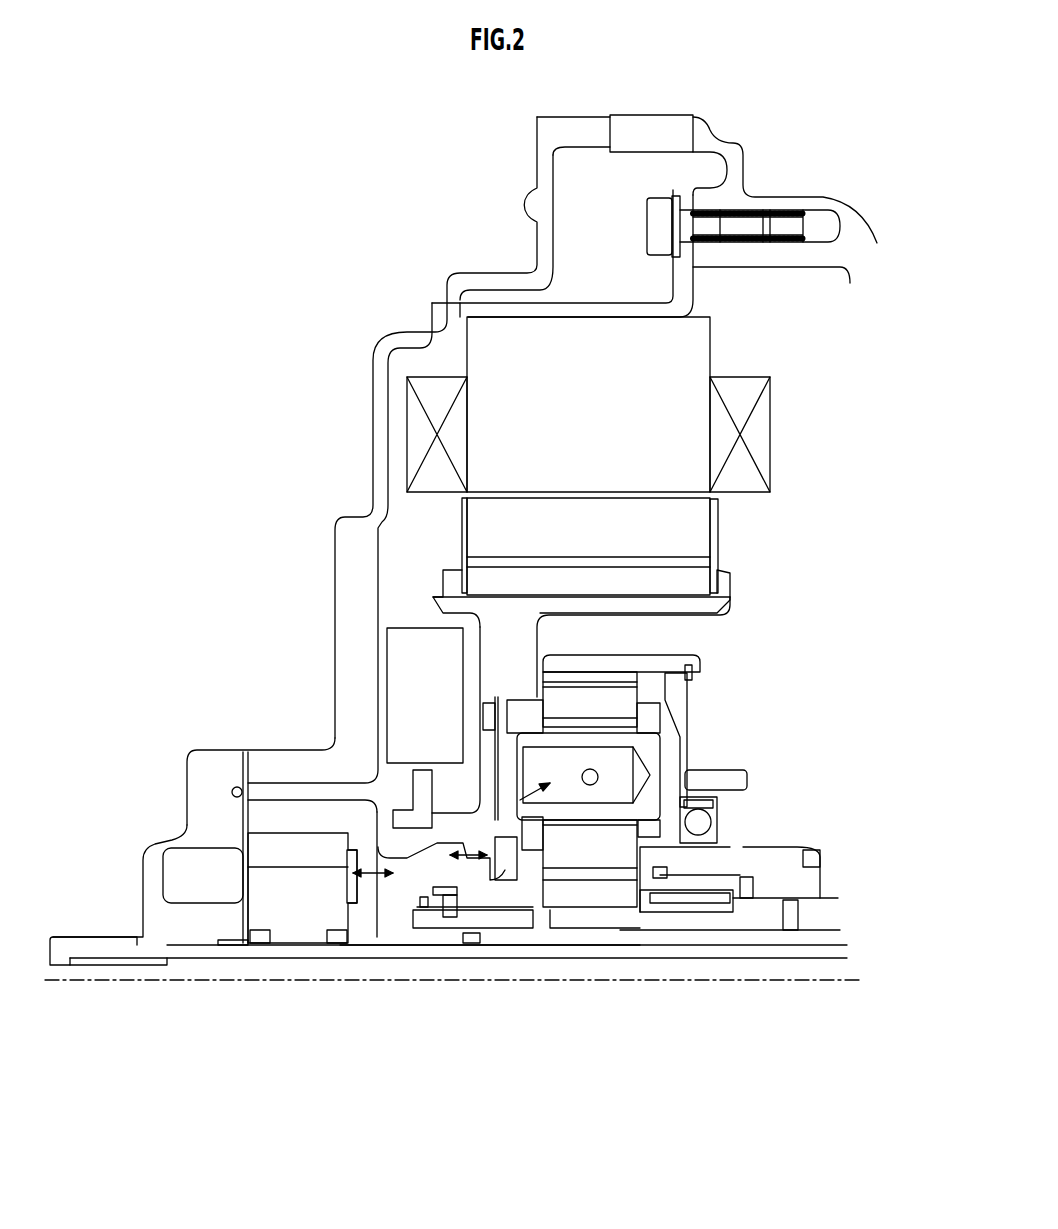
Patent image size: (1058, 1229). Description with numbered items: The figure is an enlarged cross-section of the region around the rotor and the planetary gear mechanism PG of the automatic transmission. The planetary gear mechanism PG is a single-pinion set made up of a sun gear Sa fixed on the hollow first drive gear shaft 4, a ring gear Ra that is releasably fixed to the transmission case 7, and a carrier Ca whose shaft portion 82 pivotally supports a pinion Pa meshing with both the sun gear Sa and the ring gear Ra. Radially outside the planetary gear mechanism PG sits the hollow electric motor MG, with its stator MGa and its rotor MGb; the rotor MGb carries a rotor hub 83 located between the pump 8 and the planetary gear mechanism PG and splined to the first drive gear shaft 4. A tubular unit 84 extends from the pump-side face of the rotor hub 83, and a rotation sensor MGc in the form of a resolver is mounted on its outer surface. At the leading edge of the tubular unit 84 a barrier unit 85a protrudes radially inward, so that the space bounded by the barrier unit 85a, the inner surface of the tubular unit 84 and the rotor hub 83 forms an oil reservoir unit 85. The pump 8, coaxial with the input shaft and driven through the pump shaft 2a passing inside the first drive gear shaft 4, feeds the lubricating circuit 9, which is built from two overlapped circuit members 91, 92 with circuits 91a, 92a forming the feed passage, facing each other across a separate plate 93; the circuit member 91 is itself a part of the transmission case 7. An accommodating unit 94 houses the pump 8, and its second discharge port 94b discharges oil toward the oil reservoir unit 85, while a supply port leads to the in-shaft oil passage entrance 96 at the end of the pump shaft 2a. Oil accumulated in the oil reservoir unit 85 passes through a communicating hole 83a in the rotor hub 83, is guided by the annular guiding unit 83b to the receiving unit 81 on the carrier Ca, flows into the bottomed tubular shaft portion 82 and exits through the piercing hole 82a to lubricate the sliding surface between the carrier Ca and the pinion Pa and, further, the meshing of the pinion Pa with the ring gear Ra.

The transmission case 7 is at (381, 378).
The planetary gear mechanism PG is at (533, 688).
The tubular unit 84 is at (457, 820).
The rotation sensor MGc is at (380, 782).
The lubricating circuit 9 is at (132, 780).
The circuit member 92 is at (236, 788).
The accommodating unit 94 is at (290, 853).
The circuit member 91 is at (153, 875).
The circuit 91a is at (190, 893).
The in-shaft oil passage entrance 96 is at (102, 965).
The separate plate 93 is at (247, 945).
The pump 8 is at (302, 908).
The circuit 92a is at (355, 890).
The second discharge port 94b is at (362, 930).
The barrier unit 85a is at (405, 852).
The oil reservoir unit 85 is at (445, 848).
The communicating hole 83a is at (468, 860).
The guiding unit 83b is at (517, 800).
The receiving unit 81 is at (545, 800).
The pump shaft 2a is at (597, 950).
The sun gear Sa is at (615, 848).
The first drive gear shaft 4 is at (752, 917).
The rotor hub 83 is at (518, 640).
The ring gear Ra is at (685, 660).
The piercing hole 82a is at (598, 772).
The shaft portion 82 is at (653, 792).
The carrier Ca is at (690, 772).
The pinion Pa is at (717, 830).
The stator MGa is at (765, 438).
The electric motor MG is at (862, 432).
The rotor MGb is at (683, 528).